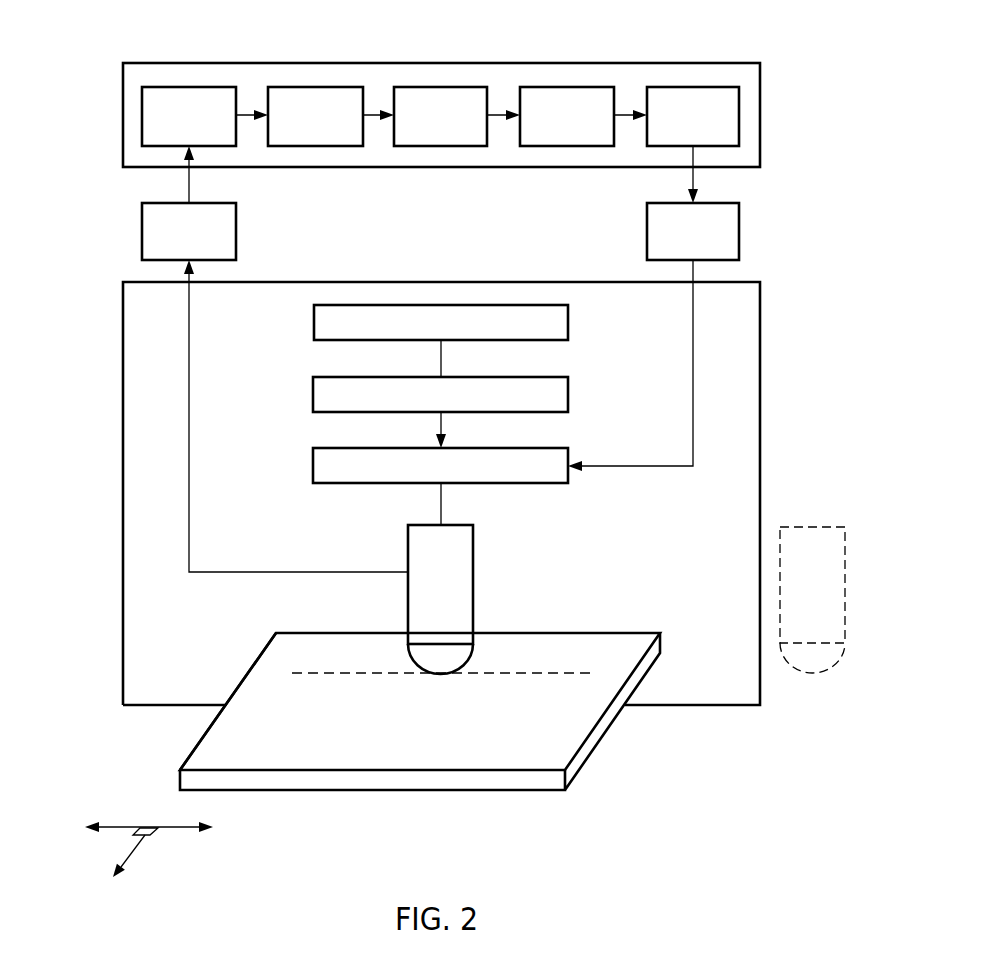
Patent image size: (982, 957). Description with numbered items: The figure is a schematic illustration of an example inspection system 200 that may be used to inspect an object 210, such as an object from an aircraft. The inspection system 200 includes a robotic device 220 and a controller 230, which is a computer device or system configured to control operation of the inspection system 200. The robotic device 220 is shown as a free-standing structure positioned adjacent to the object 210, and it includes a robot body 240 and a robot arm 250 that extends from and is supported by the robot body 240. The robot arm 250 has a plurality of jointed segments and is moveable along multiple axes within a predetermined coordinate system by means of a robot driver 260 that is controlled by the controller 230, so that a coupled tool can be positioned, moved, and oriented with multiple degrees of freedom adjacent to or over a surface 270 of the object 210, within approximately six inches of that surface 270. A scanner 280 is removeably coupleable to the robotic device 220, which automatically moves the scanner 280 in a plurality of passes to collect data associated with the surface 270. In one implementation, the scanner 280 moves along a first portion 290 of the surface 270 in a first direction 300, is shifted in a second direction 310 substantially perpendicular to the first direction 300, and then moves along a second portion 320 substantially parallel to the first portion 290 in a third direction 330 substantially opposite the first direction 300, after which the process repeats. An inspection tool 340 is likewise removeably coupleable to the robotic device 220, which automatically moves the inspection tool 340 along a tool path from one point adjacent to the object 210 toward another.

The inspection system 200 is at (272, 45).
The object 210 is at (614, 750).
The robotic device 220 is at (520, 280).
The controller 230 is at (475, 62).
The robot body 240 is at (314, 322).
The robot arm 250 is at (313, 465).
The robot driver 260 is at (313, 394).
The surface 270 is at (218, 749).
The scanner 280 is at (406, 546).
The first portion 290 is at (501, 672).
The first direction 300 is at (193, 828).
The second direction 310 is at (119, 870).
The second portion 320 is at (498, 699).
The third direction 330 is at (96, 826).
The inspection tool 340 is at (780, 584).